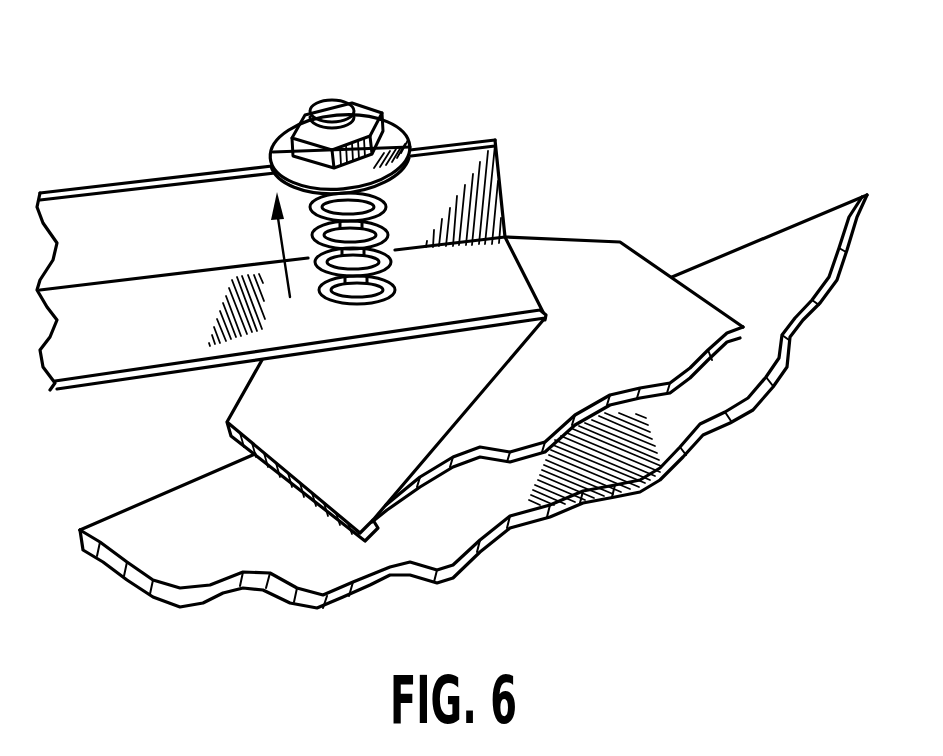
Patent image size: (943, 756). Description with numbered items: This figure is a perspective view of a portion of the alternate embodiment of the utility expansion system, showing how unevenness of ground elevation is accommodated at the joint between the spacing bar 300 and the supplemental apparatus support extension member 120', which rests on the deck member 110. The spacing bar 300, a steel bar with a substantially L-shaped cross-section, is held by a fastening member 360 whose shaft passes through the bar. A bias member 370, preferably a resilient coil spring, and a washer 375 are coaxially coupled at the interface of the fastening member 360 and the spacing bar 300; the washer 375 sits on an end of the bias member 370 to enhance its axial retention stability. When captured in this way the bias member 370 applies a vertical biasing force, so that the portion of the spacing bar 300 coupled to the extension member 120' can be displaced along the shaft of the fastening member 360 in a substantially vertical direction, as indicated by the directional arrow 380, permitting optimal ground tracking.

The deck member 110 is at (807, 257).
The supplemental apparatus support extension member 120' is at (557, 340).
The spacing bar 300 is at (497, 197).
The fastening member 360 is at (380, 252).
The bias member 370 is at (383, 250).
The washer 375 is at (281, 154).
The directional arrow 380 is at (282, 251).